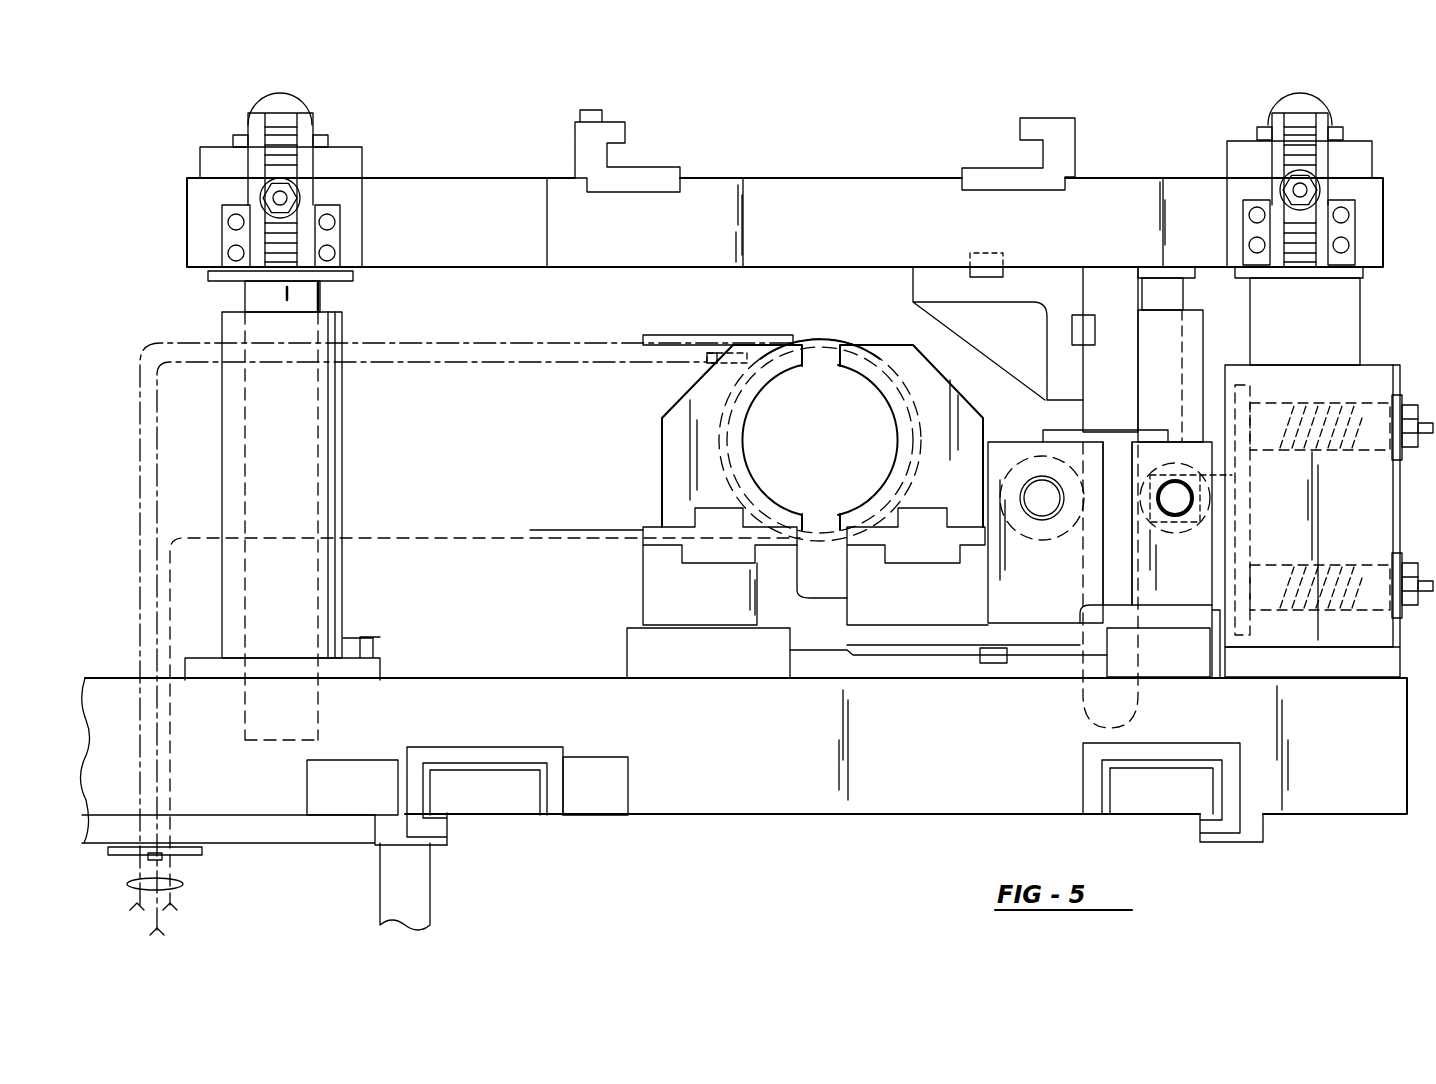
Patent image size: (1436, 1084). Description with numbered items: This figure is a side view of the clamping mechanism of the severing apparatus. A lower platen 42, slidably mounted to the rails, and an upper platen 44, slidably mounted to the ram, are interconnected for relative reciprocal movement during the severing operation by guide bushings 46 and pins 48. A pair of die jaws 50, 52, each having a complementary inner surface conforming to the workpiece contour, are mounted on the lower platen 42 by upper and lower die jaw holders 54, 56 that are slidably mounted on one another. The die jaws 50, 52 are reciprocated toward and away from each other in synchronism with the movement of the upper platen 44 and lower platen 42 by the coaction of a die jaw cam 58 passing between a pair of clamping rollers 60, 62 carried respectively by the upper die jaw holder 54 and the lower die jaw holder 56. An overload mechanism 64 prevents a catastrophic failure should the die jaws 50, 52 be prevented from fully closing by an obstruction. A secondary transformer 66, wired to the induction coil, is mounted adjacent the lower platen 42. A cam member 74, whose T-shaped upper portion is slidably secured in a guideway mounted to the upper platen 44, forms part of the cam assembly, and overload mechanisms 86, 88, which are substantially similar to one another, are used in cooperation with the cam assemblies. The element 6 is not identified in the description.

The sensor element 6 is at (712, 358).
The lower platen 42 is at (725, 778).
The upper platen 44 is at (805, 196).
The guide bushings 46 is at (330, 330).
The pins 48 is at (320, 300).
The die jaw 50 is at (960, 404).
The die jaw 52 is at (672, 428).
The upper die jaw holder 54 is at (872, 572).
The lower die jaw holder 56 is at (660, 578).
The die jaw cam 58 is at (1122, 400).
The clamping roller 60 is at (1062, 528).
The clamping roller 62 is at (1188, 528).
The overload mechanism 64 is at (820, 338).
The secondary transformer 66 is at (178, 884).
The cam member 74 is at (1335, 330).
The overload mechanism 86 is at (342, 122).
The overload mechanism 88 is at (1342, 126).